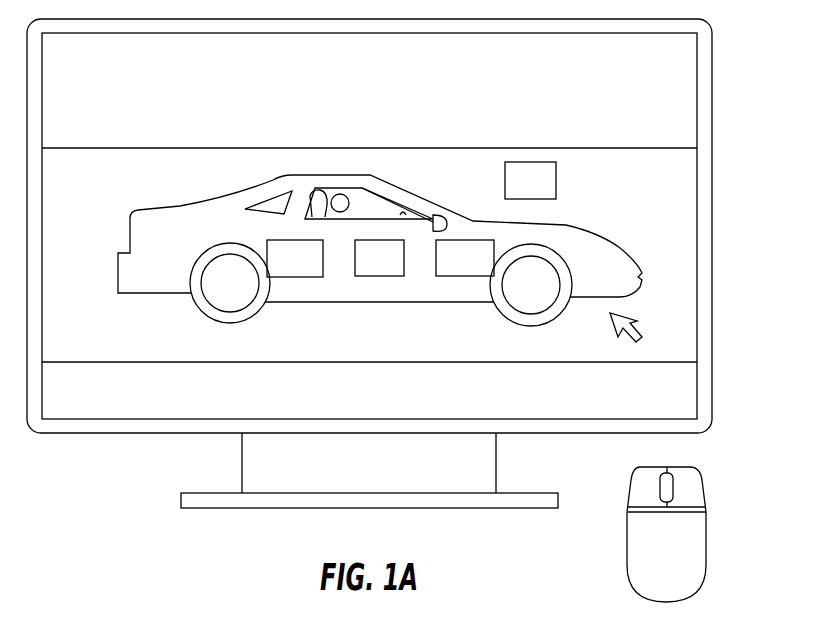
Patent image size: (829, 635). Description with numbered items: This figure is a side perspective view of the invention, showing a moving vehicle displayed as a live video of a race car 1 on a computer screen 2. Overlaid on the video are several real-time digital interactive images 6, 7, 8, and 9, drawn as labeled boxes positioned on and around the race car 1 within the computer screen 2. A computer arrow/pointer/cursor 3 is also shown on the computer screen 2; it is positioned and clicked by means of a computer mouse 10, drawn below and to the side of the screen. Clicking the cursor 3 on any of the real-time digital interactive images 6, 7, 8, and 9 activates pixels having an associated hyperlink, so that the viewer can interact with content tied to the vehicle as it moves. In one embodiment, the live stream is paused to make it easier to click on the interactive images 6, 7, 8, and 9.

The race car 1 is at (583, 233).
The computer screen 2 is at (80, 85).
The computer arrow/pointer/cursor 3 is at (627, 317).
The real-time digital interactive image 6 is at (297, 277).
The real-time digital interactive image 7 is at (380, 276).
The real-time digital interactive image 8 is at (466, 276).
The real-time digital interactive image 9 is at (530, 162).
The computer mouse 10 is at (706, 530).